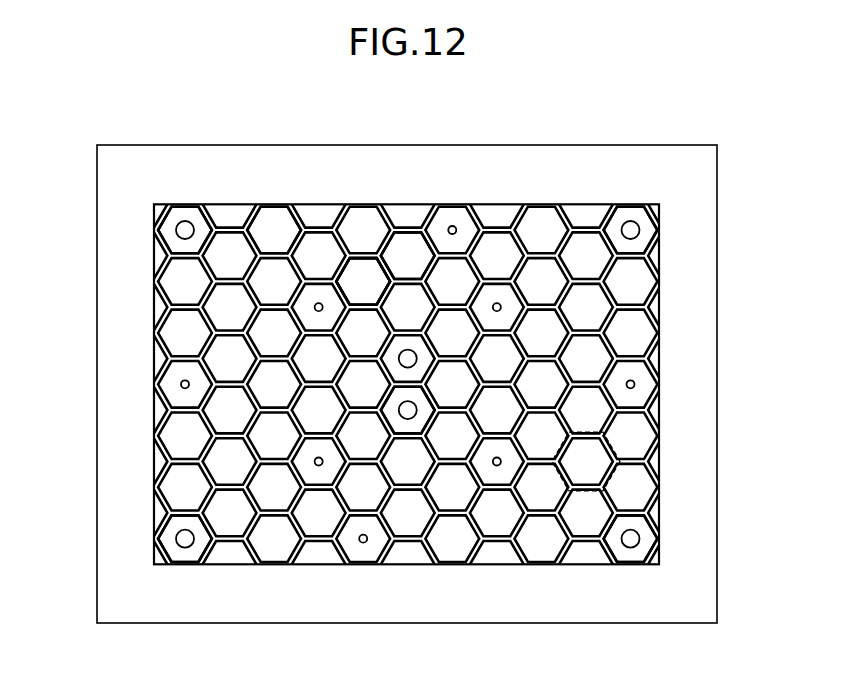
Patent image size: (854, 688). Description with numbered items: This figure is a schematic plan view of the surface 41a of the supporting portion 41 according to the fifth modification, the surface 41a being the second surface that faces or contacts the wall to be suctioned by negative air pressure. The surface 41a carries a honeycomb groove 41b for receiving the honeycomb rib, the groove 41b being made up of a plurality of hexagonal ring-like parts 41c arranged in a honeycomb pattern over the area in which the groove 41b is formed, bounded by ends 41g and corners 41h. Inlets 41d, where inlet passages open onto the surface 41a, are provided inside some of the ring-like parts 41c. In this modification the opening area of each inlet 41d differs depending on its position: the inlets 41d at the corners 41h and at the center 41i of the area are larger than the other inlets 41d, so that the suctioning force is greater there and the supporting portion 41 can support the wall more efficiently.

The supporting portion 41 is at (585, 205).
The surface 41a is at (362, 282).
The honeycomb groove 41b is at (293, 240).
The hexagonal ring-like part 41c is at (586, 492).
The inlet 41d is at (319, 303).
The end 41g is at (505, 203).
The corner 41h is at (153, 205).
The center 41i is at (404, 419).